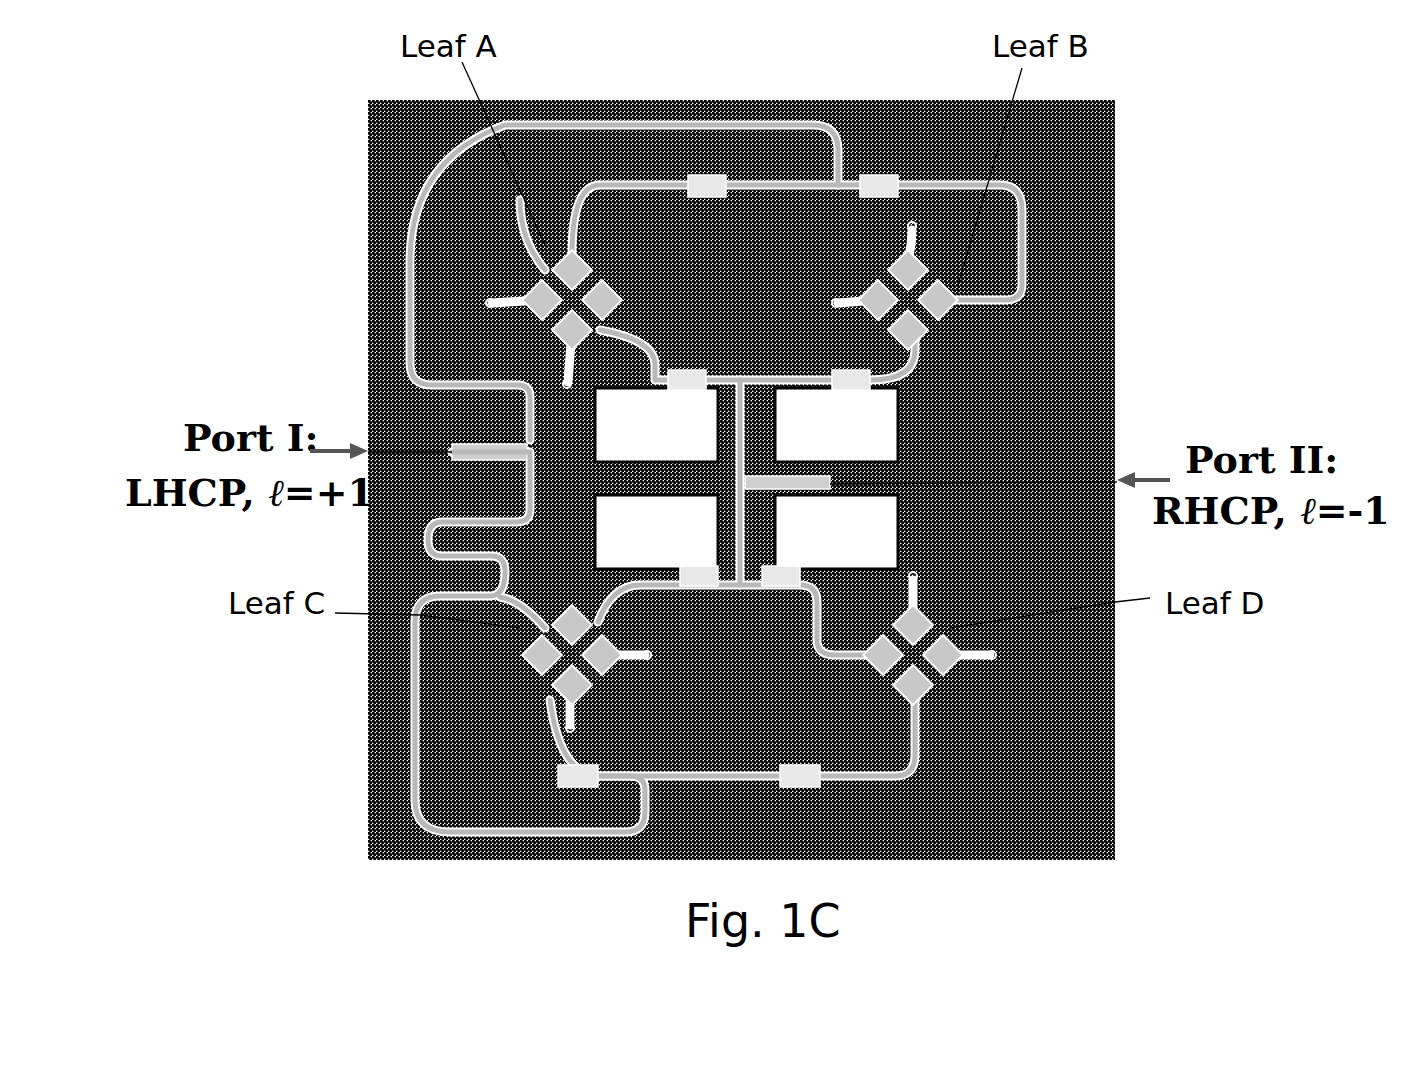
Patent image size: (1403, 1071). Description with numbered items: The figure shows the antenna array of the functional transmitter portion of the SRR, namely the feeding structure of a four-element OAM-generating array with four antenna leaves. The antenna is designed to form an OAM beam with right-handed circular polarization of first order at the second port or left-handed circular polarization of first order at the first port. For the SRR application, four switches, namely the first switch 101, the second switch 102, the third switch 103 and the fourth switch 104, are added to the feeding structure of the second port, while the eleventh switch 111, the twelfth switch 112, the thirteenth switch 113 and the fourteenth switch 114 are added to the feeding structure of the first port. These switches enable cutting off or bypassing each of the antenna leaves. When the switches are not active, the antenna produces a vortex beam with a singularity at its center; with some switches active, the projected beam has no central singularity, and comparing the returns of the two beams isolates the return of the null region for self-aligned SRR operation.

The Switch-1 101 is at (700, 388).
The Switch-2 102 is at (865, 392).
The Switch-3 103 is at (712, 572).
The Switch-4 104 is at (772, 572).
The Switch-11 111 is at (687, 221).
The Switch-12 112 is at (849, 221).
The Switch-13 113 is at (534, 755).
The Switch-14 114 is at (784, 814).